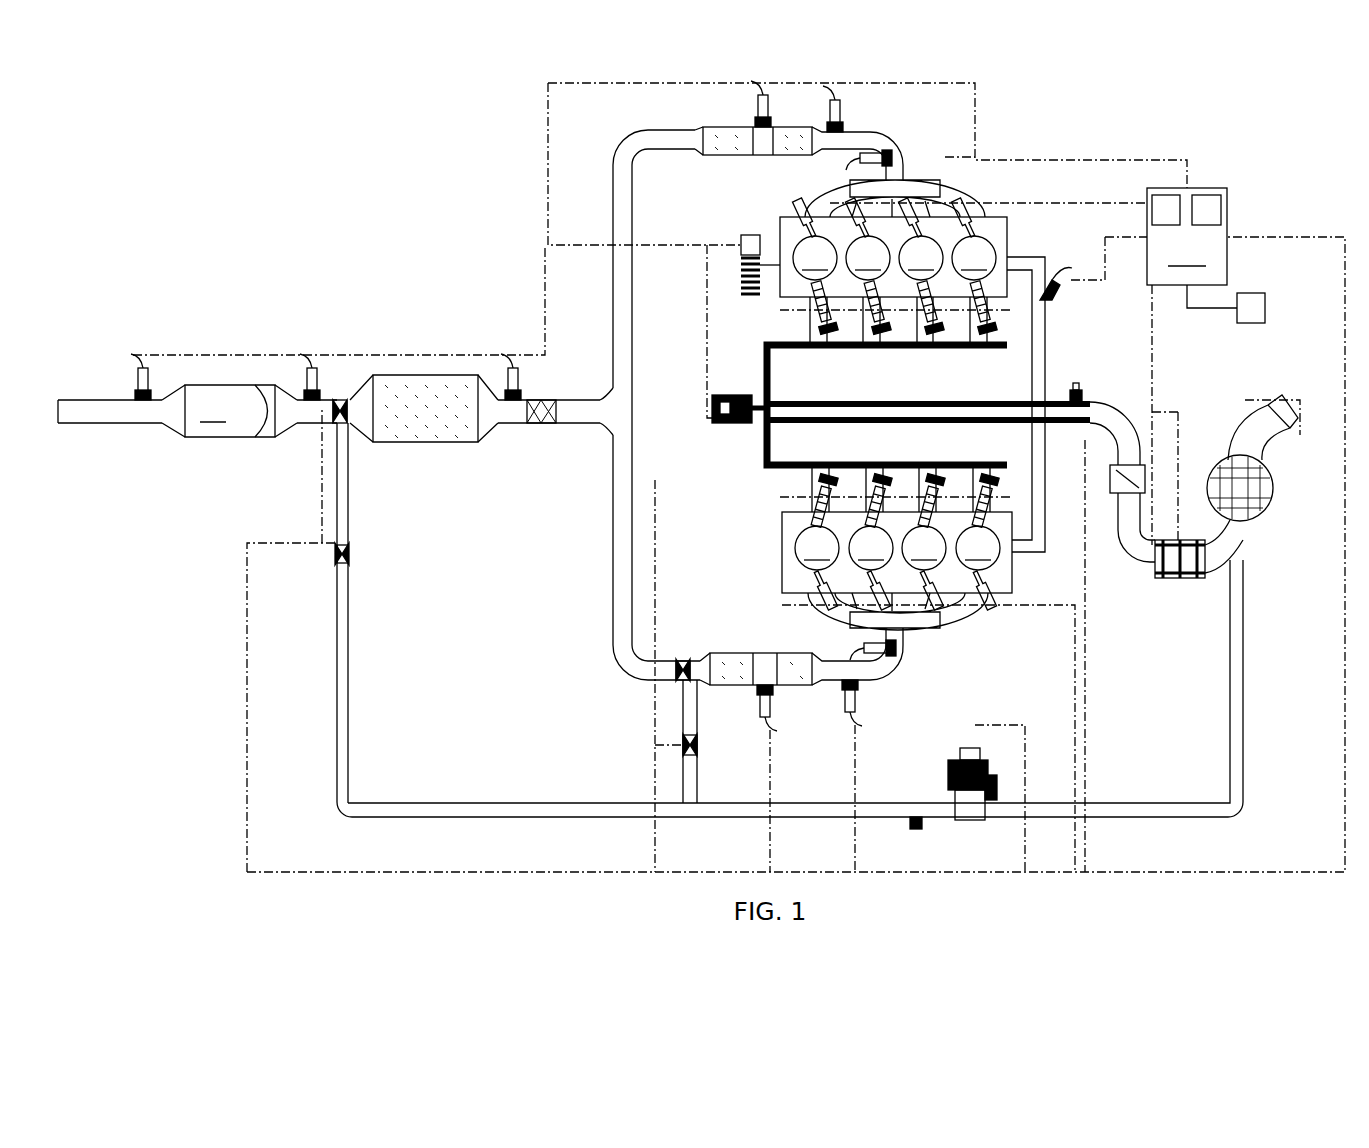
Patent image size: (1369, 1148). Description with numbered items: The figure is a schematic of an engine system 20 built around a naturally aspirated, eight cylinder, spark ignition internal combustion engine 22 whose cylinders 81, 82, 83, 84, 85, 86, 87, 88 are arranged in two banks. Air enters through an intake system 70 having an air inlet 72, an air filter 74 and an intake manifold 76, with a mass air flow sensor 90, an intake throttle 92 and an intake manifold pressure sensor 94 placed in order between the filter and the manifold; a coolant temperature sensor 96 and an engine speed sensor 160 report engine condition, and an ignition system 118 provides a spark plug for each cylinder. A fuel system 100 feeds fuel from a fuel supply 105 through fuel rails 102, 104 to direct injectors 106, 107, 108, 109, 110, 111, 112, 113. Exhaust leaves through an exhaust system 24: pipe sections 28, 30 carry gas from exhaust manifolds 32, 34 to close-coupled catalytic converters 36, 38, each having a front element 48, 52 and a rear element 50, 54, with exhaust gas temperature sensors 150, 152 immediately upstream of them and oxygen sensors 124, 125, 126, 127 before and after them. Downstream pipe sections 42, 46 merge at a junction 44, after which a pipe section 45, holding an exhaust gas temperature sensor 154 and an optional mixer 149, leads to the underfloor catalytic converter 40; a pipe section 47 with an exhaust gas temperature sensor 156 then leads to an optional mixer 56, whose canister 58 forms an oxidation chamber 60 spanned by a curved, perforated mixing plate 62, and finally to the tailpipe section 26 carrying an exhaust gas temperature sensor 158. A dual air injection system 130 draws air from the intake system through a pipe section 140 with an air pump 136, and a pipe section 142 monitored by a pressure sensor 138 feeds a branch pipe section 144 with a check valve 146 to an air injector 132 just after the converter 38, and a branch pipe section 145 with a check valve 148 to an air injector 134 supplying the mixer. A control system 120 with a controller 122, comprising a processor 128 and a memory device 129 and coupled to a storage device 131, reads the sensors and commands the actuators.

The engine system 20 is at (1095, 133).
The internal combustion engine 22 is at (1012, 233).
The exhaust system 24 is at (565, 470).
The tailpipe section 26 is at (130, 425).
The pipe section 28 is at (880, 148).
The pipe section 30 is at (872, 658).
The exhaust manifold 32 is at (962, 200).
The exhaust manifold 34 is at (968, 618).
The close-coupled catalytic converter 36 is at (712, 152).
The close-coupled catalytic converter 38 is at (745, 632).
The catalytic converter 40 is at (405, 440).
The downstream pipe section 42 is at (625, 315).
The junction 44 is at (625, 408).
The pipe section 45 is at (490, 430).
The downstream pipe section 46 is at (625, 520).
The pipe section 47 is at (274, 430).
The front element 48 is at (788, 138).
The rear element 50 is at (715, 135).
The front element 52 is at (795, 665).
The rear element 54 is at (735, 665).
The mixer 56 is at (163, 425).
The canister 58 is at (262, 440).
The oxidation chamber 60 is at (230, 411).
The mixing plate 62 is at (295, 440).
The intake system 70 is at (1282, 381).
The air inlet 72 is at (1295, 415).
The air filter 74 is at (1262, 515).
The intake manifold 76 is at (1025, 400).
The cylinder 81 is at (974, 258).
The cylinder 82 is at (978, 548).
The cylinder 83 is at (921, 258).
The cylinder 84 is at (924, 548).
The cylinder 85 is at (868, 258).
The cylinder 86 is at (871, 548).
The cylinder 87 is at (815, 258).
The cylinder 88 is at (817, 548).
The mass air flow sensor 90 is at (1175, 585).
The intake throttle 92 is at (1112, 478).
The intake manifold pressure sensor 94 is at (1082, 388).
The coolant temperature sensor 96 is at (1058, 285).
The fuel system 100 is at (707, 455).
The fuel rail 102 is at (790, 350).
The fuel rail 104 is at (795, 462).
The fuel supply 105 is at (745, 395).
The injector 106 is at (1010, 315).
The injector 107 is at (952, 340).
The injector 108 is at (900, 340).
The injector 109 is at (830, 310).
The injector 110 is at (1000, 480).
The injector 111 is at (945, 477).
The injector 112 is at (892, 478).
The injector 113 is at (832, 490).
The ignition system 118 is at (805, 225).
The control system 120 is at (1216, 168).
The controller 122 is at (1192, 248).
The oxygen sensor 124 is at (915, 155).
The oxygen sensor 125 is at (755, 82).
The oxygen sensor 126 is at (935, 655).
The oxygen sensor 127 is at (772, 705).
The processor 128 is at (1152, 200).
The memory device 129 is at (1225, 210).
The dual air injection system 130 is at (1093, 833).
The storage device 131 is at (1250, 323).
The air injector 132 is at (683, 660).
The air injector 134 is at (345, 398).
The air pump 136 is at (945, 790).
The pressure sensor 138 is at (920, 828).
The pipe section 140 is at (1245, 655).
The pipe section 142 is at (520, 820).
The branch pipe section 144 is at (700, 700).
The branch pipe section 145 is at (350, 640).
The check valve 146 is at (698, 755).
The check valve 148 is at (352, 562).
The mixer 149 is at (545, 425).
The exhaust gas temperature sensor 150 is at (840, 110).
The exhaust gas temperature sensor 152 is at (858, 705).
The exhaust gas temperature sensor 154 is at (520, 375).
The exhaust gas temperature sensor 156 is at (300, 355).
The exhaust gas temperature sensor 158 is at (130, 355).
The engine speed sensor 160 is at (750, 235).